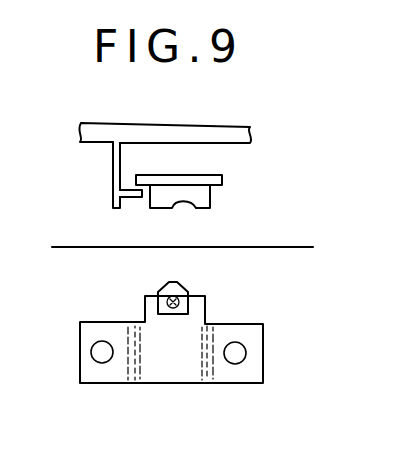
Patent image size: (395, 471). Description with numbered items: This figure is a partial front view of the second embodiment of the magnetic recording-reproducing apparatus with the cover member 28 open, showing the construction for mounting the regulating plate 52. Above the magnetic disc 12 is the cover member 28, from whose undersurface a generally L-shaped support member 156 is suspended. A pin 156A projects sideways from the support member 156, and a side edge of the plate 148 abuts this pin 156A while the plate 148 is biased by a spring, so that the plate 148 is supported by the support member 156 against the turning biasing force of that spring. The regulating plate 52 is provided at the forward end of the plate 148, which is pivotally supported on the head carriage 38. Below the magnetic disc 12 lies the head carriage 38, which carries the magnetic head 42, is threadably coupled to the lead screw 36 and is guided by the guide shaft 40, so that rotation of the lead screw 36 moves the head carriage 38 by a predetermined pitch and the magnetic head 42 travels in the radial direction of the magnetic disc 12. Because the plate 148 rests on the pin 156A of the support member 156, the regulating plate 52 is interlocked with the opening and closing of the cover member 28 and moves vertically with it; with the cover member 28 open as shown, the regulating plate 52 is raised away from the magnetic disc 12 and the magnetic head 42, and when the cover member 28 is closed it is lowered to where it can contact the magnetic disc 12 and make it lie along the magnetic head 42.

The cover member 28 is at (217, 137).
The support member 156 is at (113, 161).
The pin 156A is at (127, 199).
The plate 148 is at (217, 180).
The regulating plate 52 is at (200, 198).
The magnetic disc 12 is at (294, 246).
The magnetic head 42 is at (173, 292).
The head carriage 38 is at (255, 357).
The guide shaft 40 is at (102, 357).
The lead screw 36 is at (235, 358).